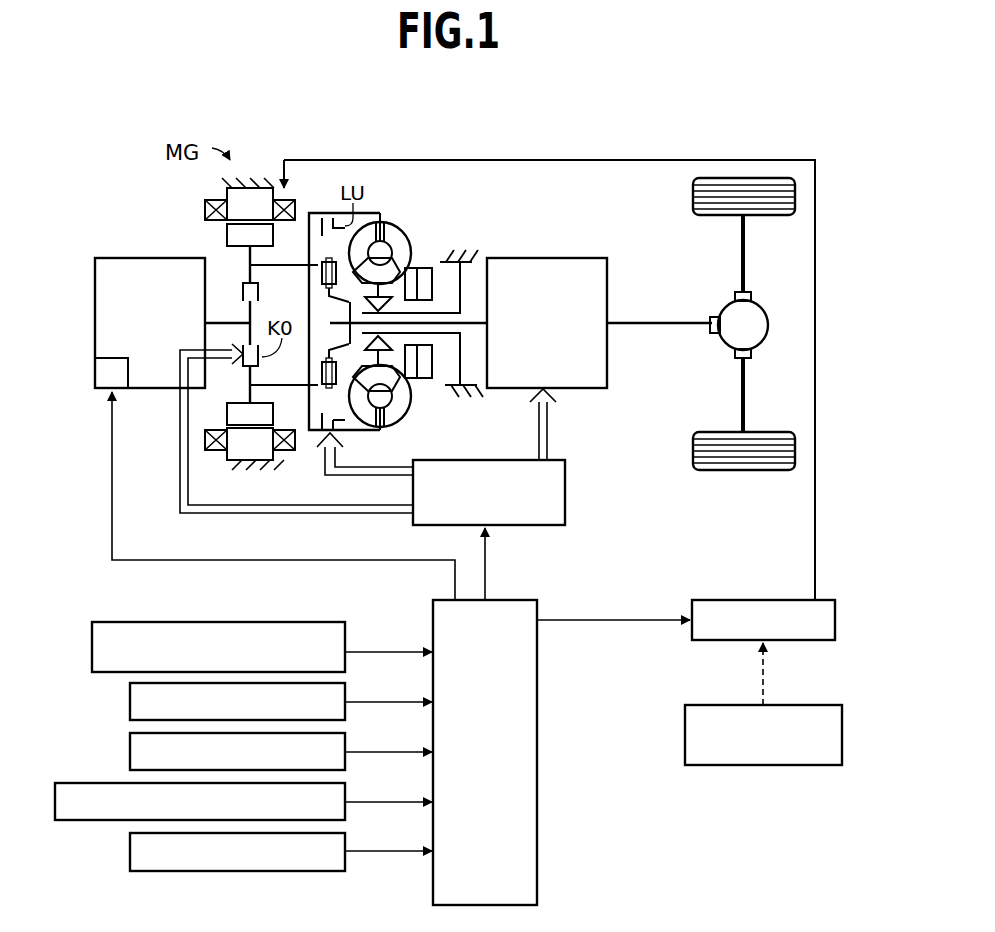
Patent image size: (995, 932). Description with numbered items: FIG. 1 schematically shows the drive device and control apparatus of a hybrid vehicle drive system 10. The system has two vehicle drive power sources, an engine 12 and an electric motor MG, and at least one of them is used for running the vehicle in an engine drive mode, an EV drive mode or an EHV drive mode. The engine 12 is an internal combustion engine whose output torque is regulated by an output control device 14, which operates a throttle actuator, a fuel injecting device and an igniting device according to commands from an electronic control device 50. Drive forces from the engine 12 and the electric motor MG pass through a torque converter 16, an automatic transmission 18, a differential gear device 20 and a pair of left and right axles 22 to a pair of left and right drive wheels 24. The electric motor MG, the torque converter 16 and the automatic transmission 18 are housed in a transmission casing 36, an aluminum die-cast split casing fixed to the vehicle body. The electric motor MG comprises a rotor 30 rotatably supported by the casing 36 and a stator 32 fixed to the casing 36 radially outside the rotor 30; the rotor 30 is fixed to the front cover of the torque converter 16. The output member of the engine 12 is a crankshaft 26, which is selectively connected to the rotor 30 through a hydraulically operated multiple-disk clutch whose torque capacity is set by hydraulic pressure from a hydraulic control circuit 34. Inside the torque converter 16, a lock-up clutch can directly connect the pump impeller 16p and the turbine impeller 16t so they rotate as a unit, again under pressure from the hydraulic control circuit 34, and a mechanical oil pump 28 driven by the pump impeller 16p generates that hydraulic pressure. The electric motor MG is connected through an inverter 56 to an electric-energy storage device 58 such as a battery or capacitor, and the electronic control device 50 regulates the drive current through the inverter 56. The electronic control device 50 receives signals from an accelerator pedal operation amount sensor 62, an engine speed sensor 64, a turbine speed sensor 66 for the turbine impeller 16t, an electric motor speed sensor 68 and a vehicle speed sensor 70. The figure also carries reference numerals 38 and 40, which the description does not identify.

The hybrid vehicle drive system 10 is at (115, 190).
The engine 12 is at (118, 262).
The output control device 14 is at (102, 376).
The torque converter 16 is at (399, 210).
The pump impeller 16p is at (400, 412).
The turbine impeller 16t is at (362, 412).
The automatic transmission 18 is at (592, 265).
The differential gear device 20 is at (757, 312).
The axles 22 is at (743, 256).
The drive wheels 24 is at (693, 199).
The crankshaft 26 is at (229, 322).
The mechanical oil pump 28 is at (426, 379).
The rotor 30 is at (230, 235).
The stator 32 is at (230, 197).
The hydraulic control circuit 34 is at (565, 469).
The transmission casing 36 is at (256, 180).
The non-rotating member 38 is at (470, 318).
The output shaft 40 is at (624, 325).
The electronic control device 50 is at (511, 600).
The inverter 56 is at (835, 609).
The electric-energy storage device 58 is at (842, 716).
The accelerator pedal operation amount sensor 62 is at (93, 651).
The engine speed sensor 64 is at (130, 700).
The turbine speed sensor 66 is at (130, 750).
The electric motor speed sensor 68 is at (55, 800).
The vehicle speed sensor 70 is at (130, 850).